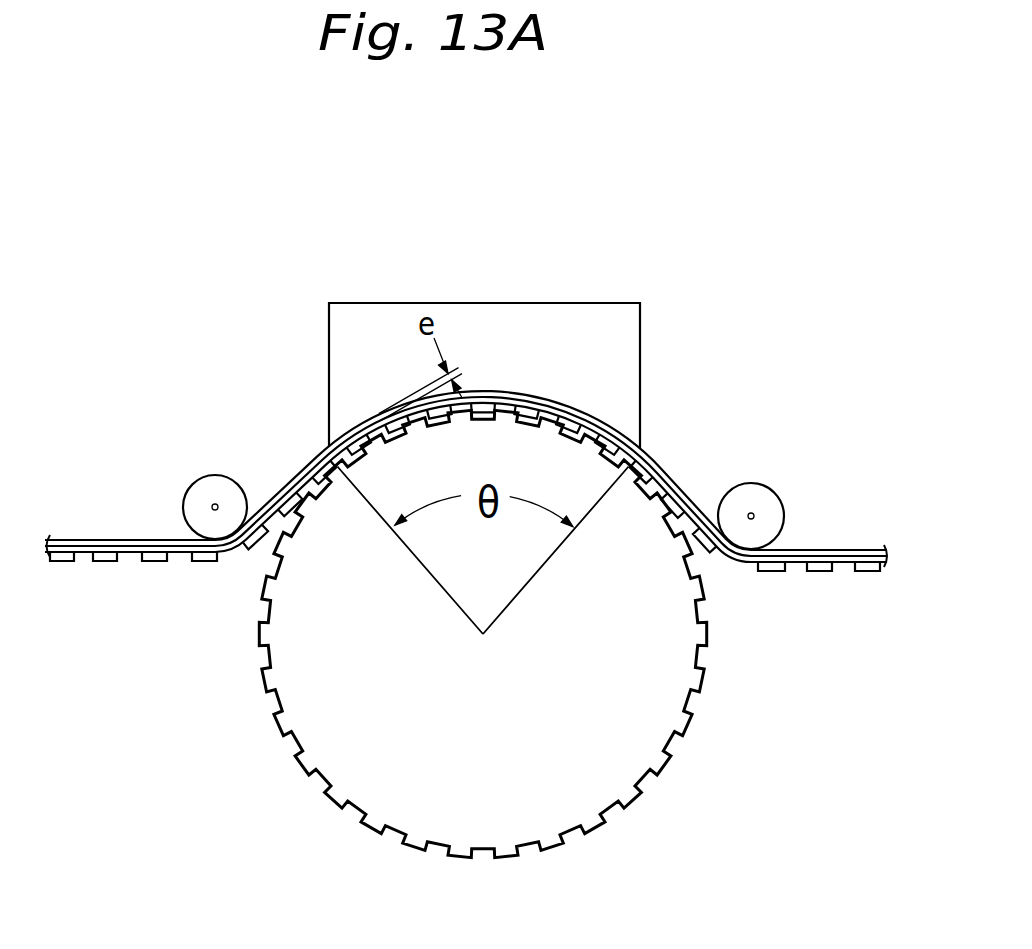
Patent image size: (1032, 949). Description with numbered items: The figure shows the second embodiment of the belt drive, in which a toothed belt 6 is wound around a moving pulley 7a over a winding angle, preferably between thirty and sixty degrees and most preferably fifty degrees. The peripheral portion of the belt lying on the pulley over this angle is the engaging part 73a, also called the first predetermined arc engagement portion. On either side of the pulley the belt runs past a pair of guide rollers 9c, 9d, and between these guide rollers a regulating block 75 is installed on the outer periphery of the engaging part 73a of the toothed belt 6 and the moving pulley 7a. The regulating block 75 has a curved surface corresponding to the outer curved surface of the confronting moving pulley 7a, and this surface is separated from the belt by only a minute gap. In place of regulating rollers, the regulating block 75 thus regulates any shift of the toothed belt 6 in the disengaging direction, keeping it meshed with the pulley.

The toothed belt 6 is at (133, 552).
The moving pulley 7a is at (667, 683).
The guide roller 9c is at (190, 508).
The guide roller 9d is at (780, 515).
The engaging part 73a is at (494, 388).
The regulating block 75 is at (328, 323).